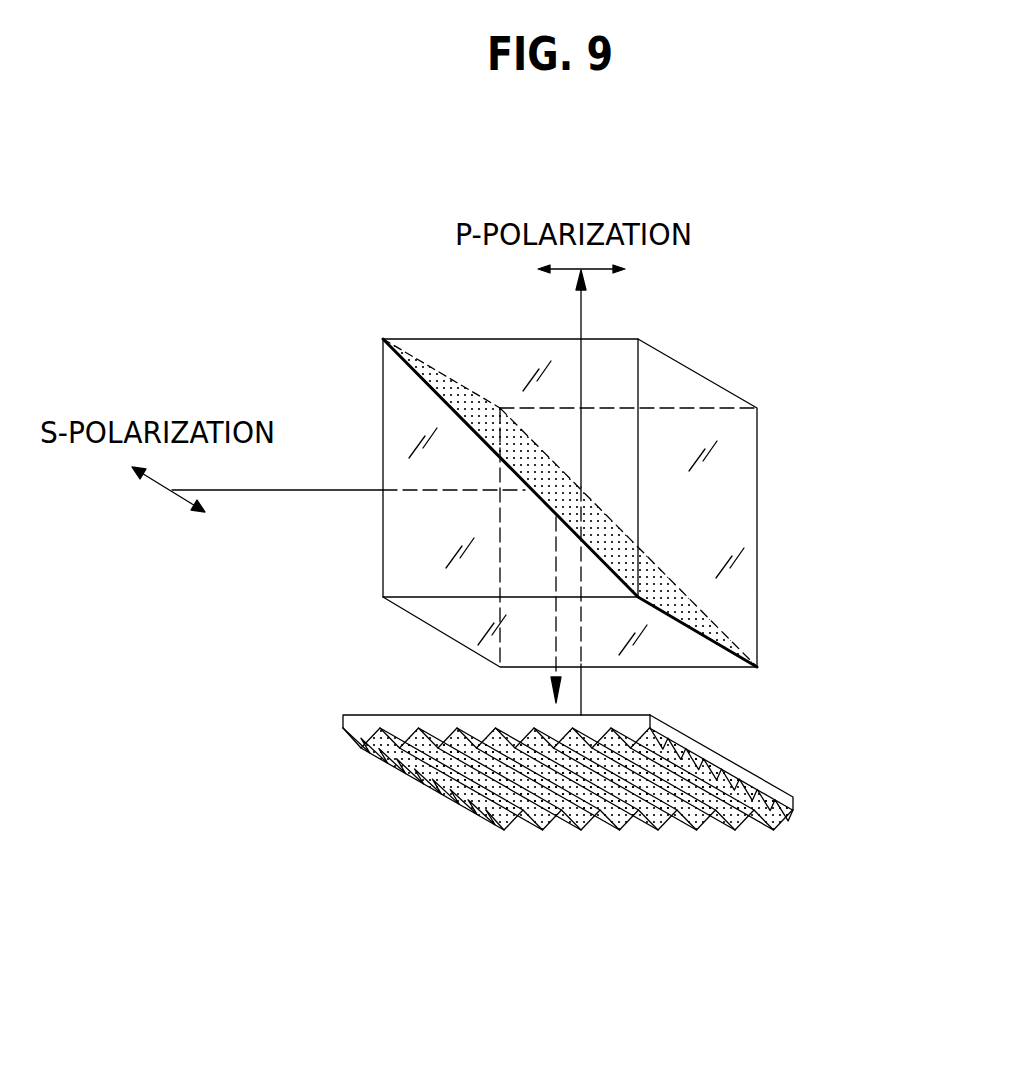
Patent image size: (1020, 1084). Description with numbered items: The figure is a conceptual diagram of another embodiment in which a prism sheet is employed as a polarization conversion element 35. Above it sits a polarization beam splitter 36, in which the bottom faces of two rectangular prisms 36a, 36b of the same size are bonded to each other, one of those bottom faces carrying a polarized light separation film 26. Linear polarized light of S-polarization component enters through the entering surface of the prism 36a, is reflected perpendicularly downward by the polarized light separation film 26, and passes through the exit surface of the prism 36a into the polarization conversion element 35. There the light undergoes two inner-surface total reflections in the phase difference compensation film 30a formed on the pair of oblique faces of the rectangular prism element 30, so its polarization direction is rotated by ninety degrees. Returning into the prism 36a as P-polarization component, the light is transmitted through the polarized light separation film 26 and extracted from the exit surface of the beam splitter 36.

The polarized light separation film 26 is at (653, 578).
The rectangular prism element 30 is at (565, 774).
The phase difference compensation film 30a is at (553, 826).
The polarization conversion element 35 is at (576, 774).
The polarization beam splitter 36 is at (573, 472).
The rectangular prism 36a is at (383, 544).
The rectangular prism 36b is at (683, 362).